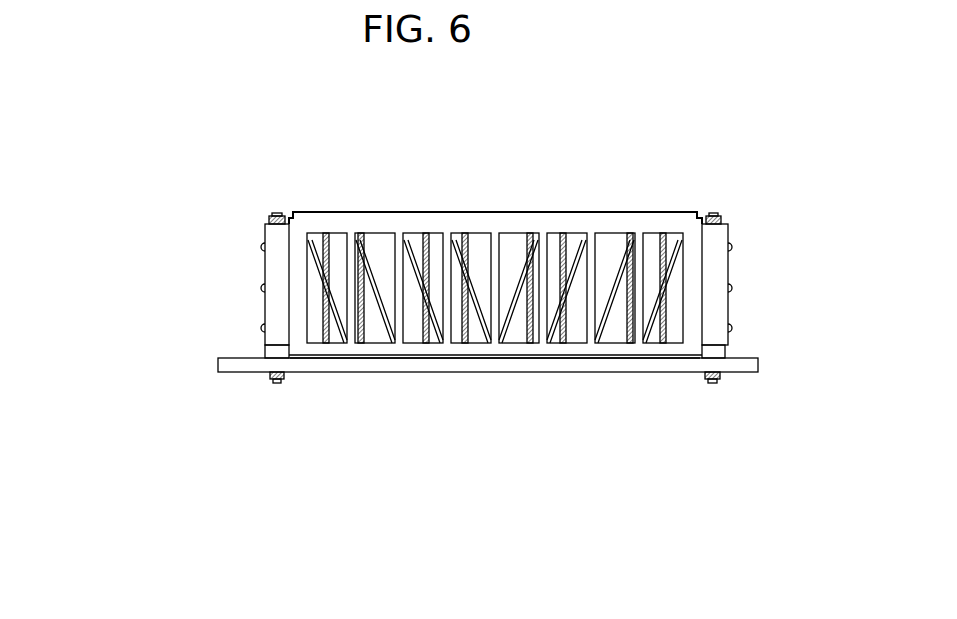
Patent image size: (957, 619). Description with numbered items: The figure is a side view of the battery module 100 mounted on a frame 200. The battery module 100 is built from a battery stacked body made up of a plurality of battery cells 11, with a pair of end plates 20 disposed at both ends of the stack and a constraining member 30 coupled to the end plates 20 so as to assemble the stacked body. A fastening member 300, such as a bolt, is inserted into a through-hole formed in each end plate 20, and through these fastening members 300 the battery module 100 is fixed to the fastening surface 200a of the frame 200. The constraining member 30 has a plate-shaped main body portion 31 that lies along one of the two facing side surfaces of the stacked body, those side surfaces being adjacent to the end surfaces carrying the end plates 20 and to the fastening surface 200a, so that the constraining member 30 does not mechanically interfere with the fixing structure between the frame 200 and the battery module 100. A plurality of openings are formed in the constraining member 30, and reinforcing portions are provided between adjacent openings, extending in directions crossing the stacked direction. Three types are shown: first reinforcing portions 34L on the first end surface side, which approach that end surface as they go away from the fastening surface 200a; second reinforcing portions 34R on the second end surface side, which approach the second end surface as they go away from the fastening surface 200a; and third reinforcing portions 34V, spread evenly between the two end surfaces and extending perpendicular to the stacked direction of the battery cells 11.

The battery module 100 is at (160, 288).
The battery cell 11 is at (383, 252).
The end plate 20 is at (267, 223).
The constraining member 30 is at (732, 260).
The main body portion 31 is at (282, 267).
The fastening member 300 is at (713, 215).
The first reinforcing portion 34L is at (338, 305).
The third reinforcing portion 34V is at (403, 312).
The second reinforcing portion 34R is at (655, 307).
The frame 200 is at (747, 367).
The fastening surface 200a is at (740, 355).